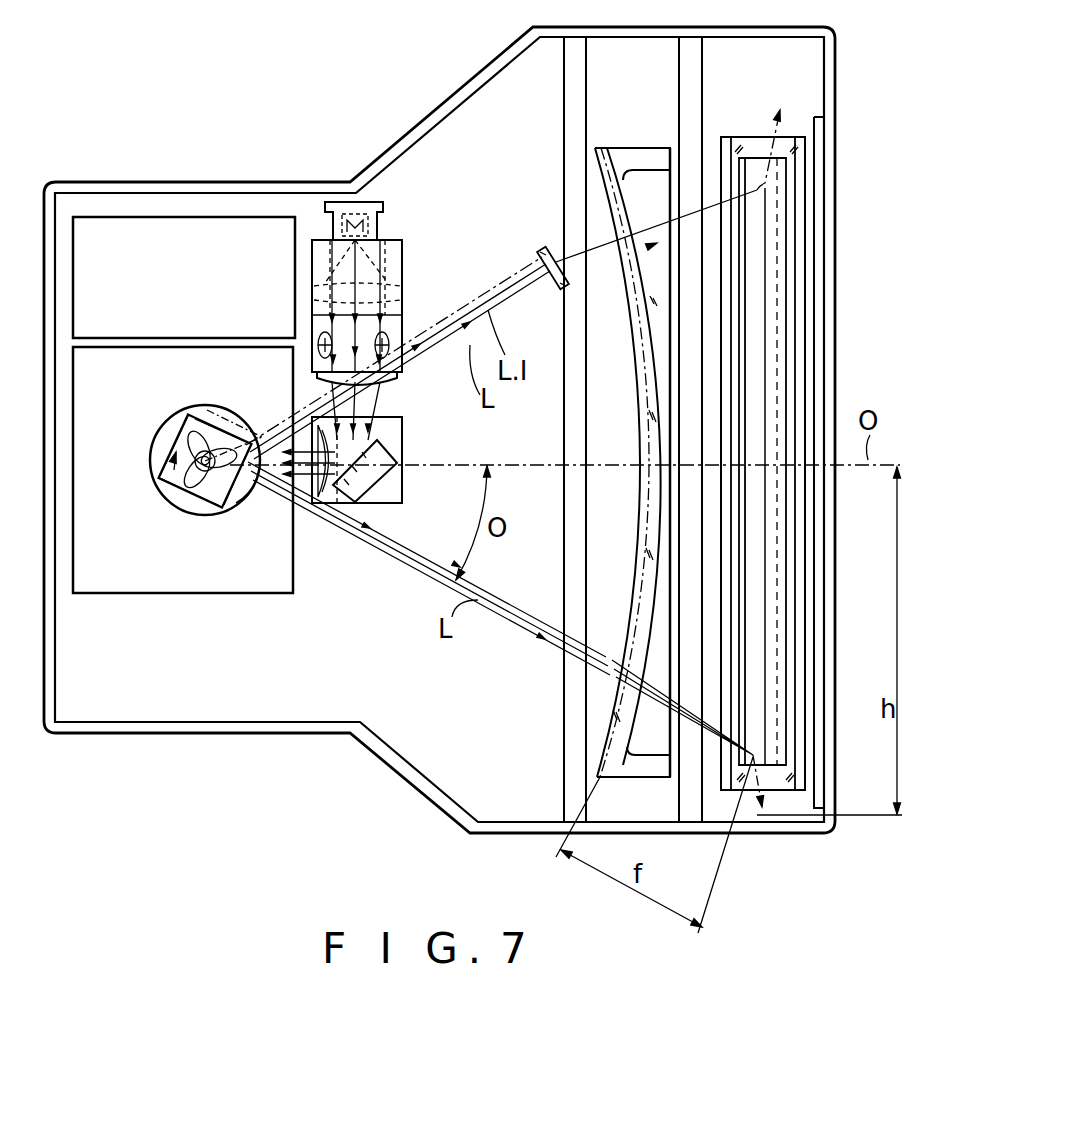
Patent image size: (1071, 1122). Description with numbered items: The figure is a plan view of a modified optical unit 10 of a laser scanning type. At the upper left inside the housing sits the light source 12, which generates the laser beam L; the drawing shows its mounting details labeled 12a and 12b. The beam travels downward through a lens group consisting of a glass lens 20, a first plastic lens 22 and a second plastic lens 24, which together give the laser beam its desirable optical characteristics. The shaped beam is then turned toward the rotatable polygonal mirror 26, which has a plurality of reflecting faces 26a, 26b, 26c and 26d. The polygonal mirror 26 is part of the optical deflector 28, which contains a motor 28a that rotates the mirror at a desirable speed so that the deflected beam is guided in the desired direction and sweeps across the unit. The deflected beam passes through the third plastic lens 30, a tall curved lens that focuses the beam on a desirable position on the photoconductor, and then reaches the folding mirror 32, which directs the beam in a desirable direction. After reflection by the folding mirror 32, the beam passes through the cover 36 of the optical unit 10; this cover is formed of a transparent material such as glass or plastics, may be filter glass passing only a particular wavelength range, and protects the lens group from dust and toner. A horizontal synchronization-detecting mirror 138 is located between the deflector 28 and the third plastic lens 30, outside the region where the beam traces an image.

The optical unit 10 is at (350, 747).
The light source 12 is at (412, 200).
The light emitting element 12a is at (368, 223).
The light source holder 12b is at (362, 200).
The glass lens 20 is at (400, 270).
The first plastic lens 22 is at (378, 388).
The second plastic lens 24 is at (360, 500).
The polygonal mirror 26 is at (220, 467).
The reflecting face 26a is at (240, 428).
The reflecting face 26b is at (173, 420).
The reflecting face 26c is at (167, 495).
The reflecting face 26d is at (247, 492).
The optical deflector 28 is at (195, 457).
The motor 28a is at (238, 503).
The third plastic lens 30 is at (645, 158).
The folding mirror 32 is at (757, 662).
The cover 36 is at (752, 145).
The horizontal synchronization-detecting mirror 138 is at (540, 250).